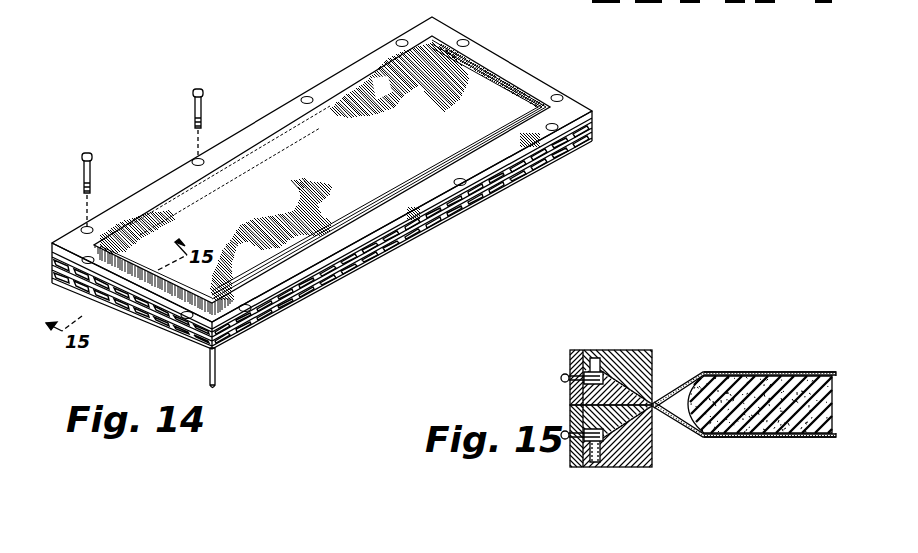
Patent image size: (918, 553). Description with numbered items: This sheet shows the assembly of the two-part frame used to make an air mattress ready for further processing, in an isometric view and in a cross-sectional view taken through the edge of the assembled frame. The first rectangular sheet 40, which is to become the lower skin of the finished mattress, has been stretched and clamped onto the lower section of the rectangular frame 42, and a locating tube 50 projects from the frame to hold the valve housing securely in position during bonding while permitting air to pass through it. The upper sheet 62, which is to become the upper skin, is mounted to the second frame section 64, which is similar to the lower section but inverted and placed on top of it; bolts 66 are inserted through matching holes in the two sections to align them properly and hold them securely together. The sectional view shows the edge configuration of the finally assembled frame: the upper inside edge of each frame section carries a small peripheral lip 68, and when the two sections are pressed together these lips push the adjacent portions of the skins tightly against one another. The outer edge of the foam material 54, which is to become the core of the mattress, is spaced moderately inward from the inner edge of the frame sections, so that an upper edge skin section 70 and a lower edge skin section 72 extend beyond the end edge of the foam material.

In FIG. 15, the first rectangular sheet 40 is at (768, 438).
In FIG. 14, the first lower section of a rectangular frame 42 is at (323, 307).
In FIG. 15, the first lower section of a rectangular frame 42 is at (628, 468).
In FIG. 14, the locating tube 50 is at (220, 376).
In FIG. 15, the foam material 54 is at (805, 373).
In FIG. 14, the upper sheet 62 is at (371, 167).
In FIG. 15, the upper sheet 62 is at (766, 373).
In FIG. 14, the second frame section 64 is at (341, 74).
In FIG. 15, the second frame section 64 is at (636, 351).
In FIG. 14, the bolts 66 is at (203, 105).
In FIG. 15, the bolts 66 is at (598, 364).
In FIG. 15, the peripheral lip 68 is at (655, 400).
In FIG. 15, the upper edge skin section 70 is at (690, 378).
In FIG. 15, the lower edge skin section 72 is at (688, 431).